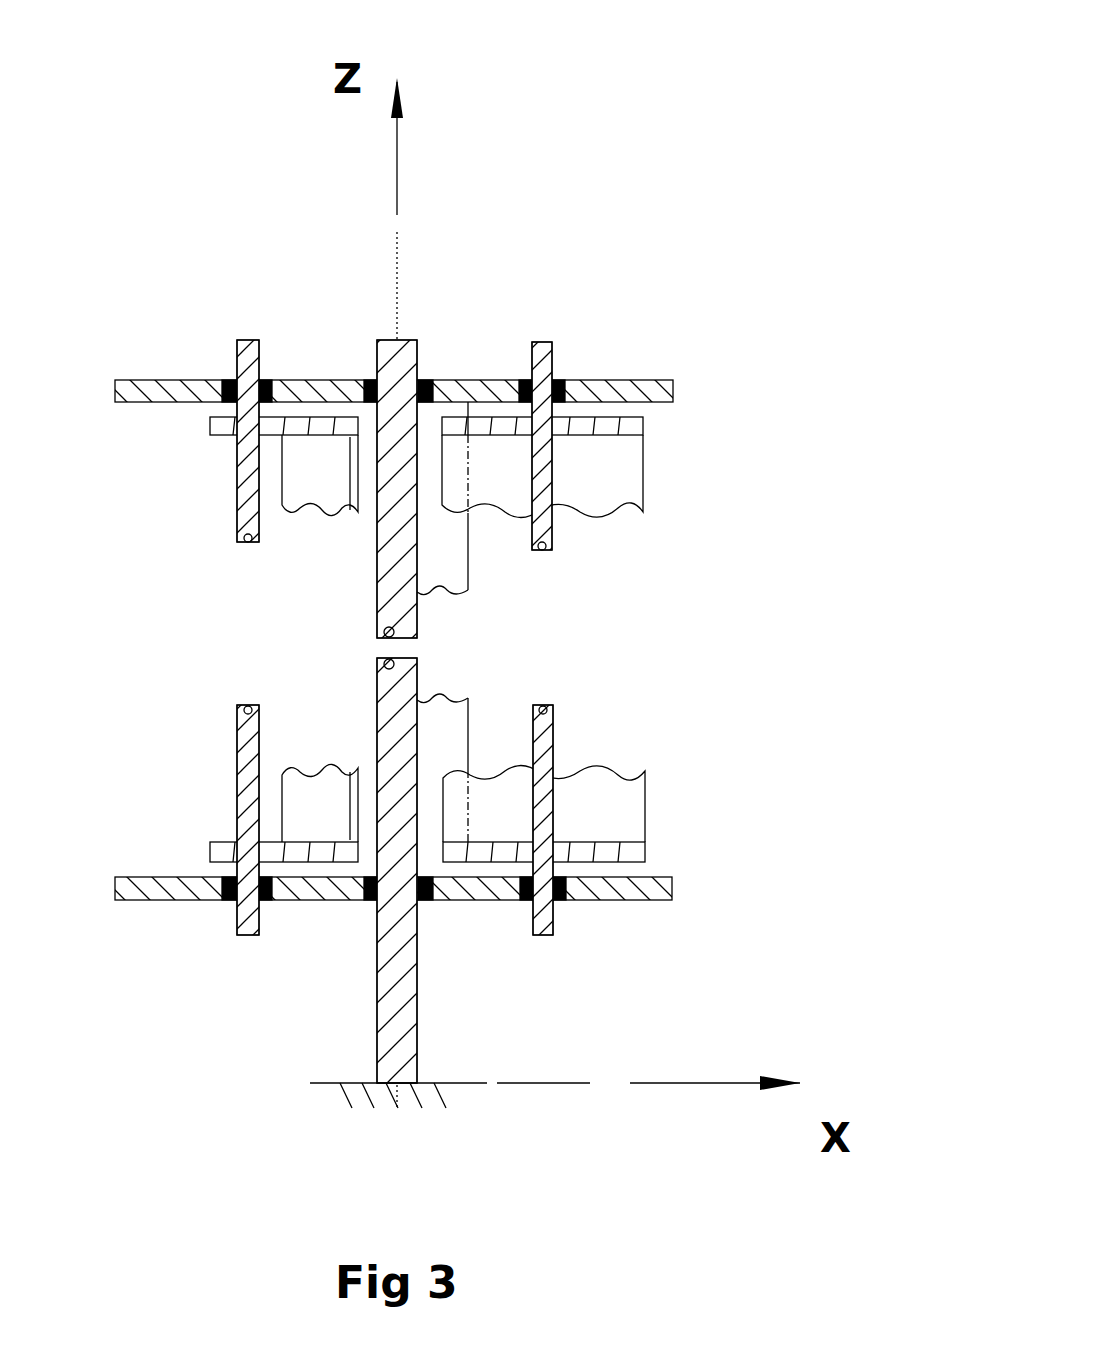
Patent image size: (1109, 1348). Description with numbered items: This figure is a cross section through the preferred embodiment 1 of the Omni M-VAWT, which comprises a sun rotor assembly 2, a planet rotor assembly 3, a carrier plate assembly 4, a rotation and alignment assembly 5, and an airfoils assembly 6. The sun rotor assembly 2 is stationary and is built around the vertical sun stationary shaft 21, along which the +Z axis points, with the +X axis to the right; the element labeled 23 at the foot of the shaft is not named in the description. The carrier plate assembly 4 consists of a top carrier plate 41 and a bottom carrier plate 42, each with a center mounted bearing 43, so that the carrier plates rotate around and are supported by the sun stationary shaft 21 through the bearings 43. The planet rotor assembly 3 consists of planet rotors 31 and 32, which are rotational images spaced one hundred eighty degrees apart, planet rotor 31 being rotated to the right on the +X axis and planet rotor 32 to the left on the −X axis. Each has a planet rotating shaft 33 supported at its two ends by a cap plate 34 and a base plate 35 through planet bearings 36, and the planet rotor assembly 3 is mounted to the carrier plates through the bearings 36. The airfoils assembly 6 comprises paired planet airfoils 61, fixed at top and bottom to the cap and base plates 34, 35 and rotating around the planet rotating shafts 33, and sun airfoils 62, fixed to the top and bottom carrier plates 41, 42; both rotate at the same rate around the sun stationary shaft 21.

The preferred embodiment 1 is at (866, 70).
The sun rotor assembly 2 is at (843, 221).
The planet rotor assembly 3 is at (921, 195).
The carrier plate assembly 4 is at (921, 232).
The rotation and alignment assembly 5 is at (921, 268).
The airfoils assembly 6 is at (921, 303).
The sun stationary shaft 21 is at (393, 340).
The base 23 is at (390, 1082).
The planet rotor 31 is at (535, 345).
The planet rotor 32 is at (238, 343).
The planet rotating shaft 33 is at (383, 591).
The cap plate 34 is at (208, 430).
The base plate 35 is at (210, 845).
The planet bearing 36 is at (230, 383).
The top carrier plate 41 is at (605, 380).
The bottom carrier plate 42 is at (605, 897).
The bearing 43 is at (427, 380).
The planet airfoil 61 is at (305, 512).
The sun airfoil 62 is at (442, 585).